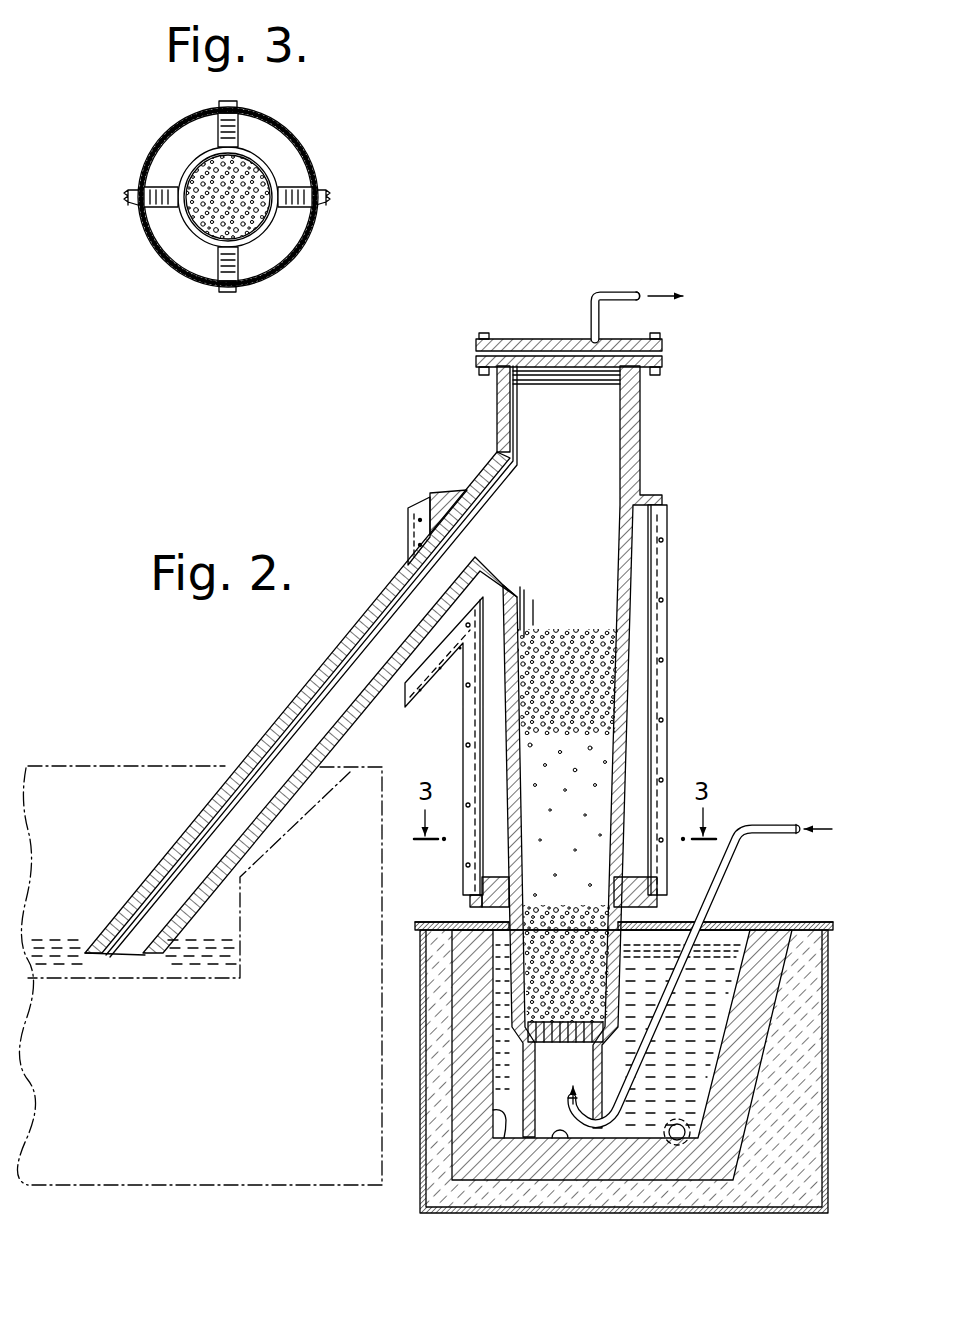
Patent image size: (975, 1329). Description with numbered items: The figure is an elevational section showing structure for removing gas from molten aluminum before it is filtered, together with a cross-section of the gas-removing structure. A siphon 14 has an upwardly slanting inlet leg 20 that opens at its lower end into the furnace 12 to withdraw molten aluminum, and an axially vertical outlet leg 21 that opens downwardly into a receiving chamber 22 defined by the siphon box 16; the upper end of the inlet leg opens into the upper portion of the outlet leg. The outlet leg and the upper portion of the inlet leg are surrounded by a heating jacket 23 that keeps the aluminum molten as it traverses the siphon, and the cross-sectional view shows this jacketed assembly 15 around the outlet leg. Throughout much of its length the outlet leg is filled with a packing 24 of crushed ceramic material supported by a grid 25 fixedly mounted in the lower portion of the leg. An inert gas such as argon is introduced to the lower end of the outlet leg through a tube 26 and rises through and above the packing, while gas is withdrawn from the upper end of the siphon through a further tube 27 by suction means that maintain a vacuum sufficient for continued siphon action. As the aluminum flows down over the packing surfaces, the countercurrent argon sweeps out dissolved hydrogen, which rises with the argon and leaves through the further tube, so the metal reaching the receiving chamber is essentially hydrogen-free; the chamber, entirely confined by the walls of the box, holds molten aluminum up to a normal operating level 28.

In FIG. 2, the furnace 12 is at (206, 1067).
In FIG. 2, the siphon 14 is at (458, 447).
In FIG. 3, the housing 15 is at (200, 295).
In FIG. 2, the housing 15 is at (688, 680).
In FIG. 2, the siphon box 16 is at (598, 1213).
In FIG. 2, the inlet leg 20 is at (298, 716).
In FIG. 3, the outlet leg 21 is at (252, 240).
In FIG. 2, the outlet leg 21 is at (620, 572).
In FIG. 2, the receiving chamber 22 is at (505, 1130).
In FIG. 3, the heating jacket 23 is at (313, 229).
In FIG. 2, the heating jacket 23 is at (478, 707).
In FIG. 3, the packing 24 is at (207, 210).
In FIG. 2, the packing 24 is at (594, 630).
In FIG. 2, the grid 25 is at (563, 1047).
In FIG. 2, the tube 26 is at (733, 884).
In FIG. 2, the further tube 27 is at (591, 320).
In FIG. 2, the level 28 is at (500, 921).